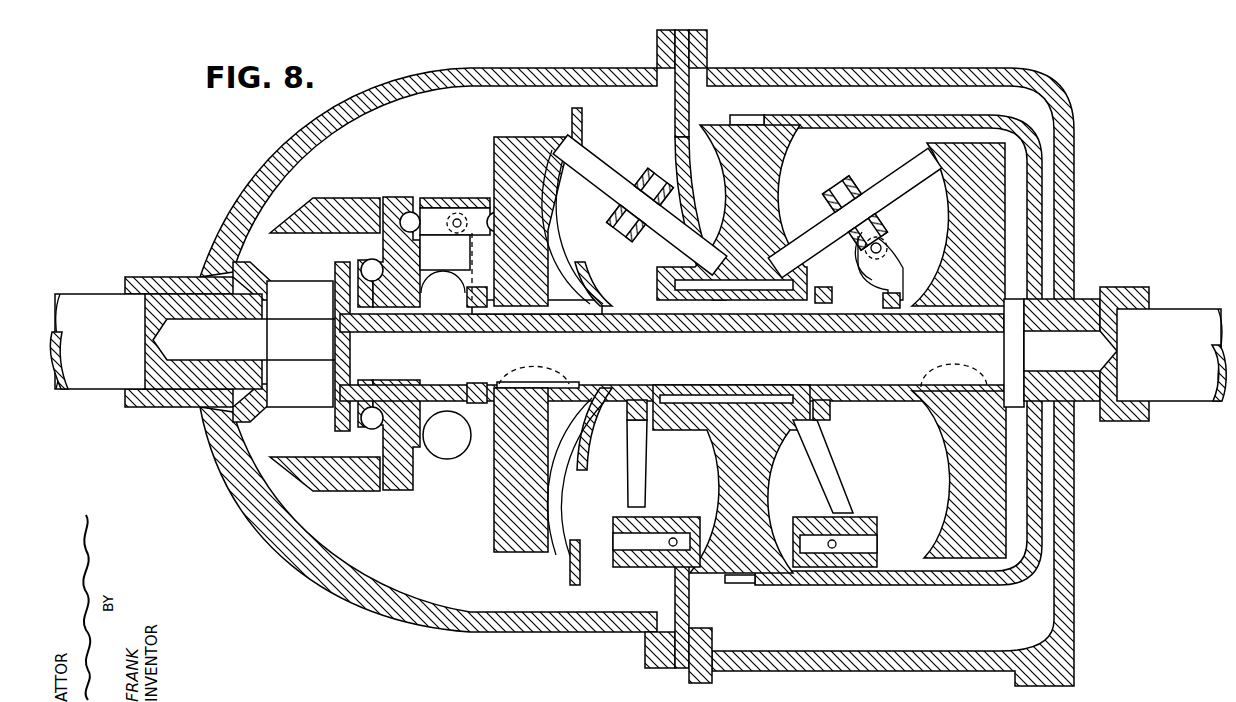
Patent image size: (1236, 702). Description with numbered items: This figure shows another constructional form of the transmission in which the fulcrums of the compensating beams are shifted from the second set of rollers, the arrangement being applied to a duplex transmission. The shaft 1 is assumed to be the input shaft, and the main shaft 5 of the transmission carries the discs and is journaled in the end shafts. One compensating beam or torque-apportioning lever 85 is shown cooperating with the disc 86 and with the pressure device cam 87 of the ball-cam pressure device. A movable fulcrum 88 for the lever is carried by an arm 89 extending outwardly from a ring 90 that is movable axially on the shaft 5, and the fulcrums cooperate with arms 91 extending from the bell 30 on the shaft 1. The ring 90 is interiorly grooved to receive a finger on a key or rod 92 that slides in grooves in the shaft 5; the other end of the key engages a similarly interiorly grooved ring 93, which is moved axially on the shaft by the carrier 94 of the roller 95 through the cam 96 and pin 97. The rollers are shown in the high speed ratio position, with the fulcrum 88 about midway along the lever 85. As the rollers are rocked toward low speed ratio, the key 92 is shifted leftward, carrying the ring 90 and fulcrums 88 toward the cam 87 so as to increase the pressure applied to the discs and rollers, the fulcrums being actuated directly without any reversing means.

The input shaft 1 is at (78, 310).
The main shaft 5 is at (672, 357).
The bell 30 is at (322, 210).
The compensating beam 85 is at (434, 216).
The disc 86 is at (528, 150).
The pressure device cam 87 is at (395, 200).
The movable fulcrum 88 is at (460, 216).
The arm 89 is at (463, 282).
The ring 90 is at (472, 392).
The arm 91 is at (413, 212).
The key or rod 92 is at (528, 312).
The interiorly grooved ring 93 is at (897, 400).
The carrier 94 is at (868, 182).
The roller 95 is at (898, 180).
The cam 96 is at (880, 288).
The pin 97 is at (880, 248).